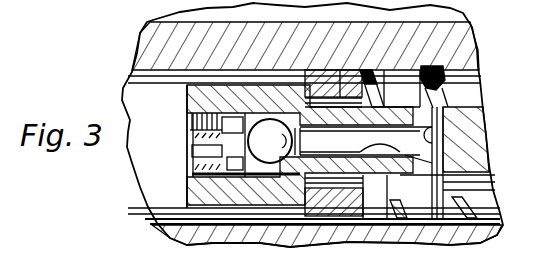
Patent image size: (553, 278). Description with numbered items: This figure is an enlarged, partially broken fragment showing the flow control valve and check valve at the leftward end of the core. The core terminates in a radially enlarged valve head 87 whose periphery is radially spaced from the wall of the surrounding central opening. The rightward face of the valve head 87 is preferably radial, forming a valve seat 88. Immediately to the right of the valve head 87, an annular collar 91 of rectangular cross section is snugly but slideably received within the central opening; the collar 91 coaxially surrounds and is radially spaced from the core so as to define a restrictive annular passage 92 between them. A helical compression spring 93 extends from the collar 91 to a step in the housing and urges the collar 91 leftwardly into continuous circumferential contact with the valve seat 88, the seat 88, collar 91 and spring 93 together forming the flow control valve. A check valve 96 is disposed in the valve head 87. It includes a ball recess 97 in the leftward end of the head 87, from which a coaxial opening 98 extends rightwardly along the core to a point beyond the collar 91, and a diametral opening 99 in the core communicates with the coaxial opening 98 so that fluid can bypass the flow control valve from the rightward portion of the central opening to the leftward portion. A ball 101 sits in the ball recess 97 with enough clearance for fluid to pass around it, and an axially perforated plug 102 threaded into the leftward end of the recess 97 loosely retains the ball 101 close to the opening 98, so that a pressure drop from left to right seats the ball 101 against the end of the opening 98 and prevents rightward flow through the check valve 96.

The valve head 87 is at (240, 90).
The valve seat 88 is at (308, 68).
The annular collar 91 is at (321, 72).
The restrictive annular passage 92 is at (354, 70).
The helical compression spring 93 is at (450, 65).
The check valve 96 is at (173, 171).
The ball recess 97 is at (187, 125).
The coaxial opening 98 is at (450, 197).
The diametral opening 99 is at (440, 126).
The ball 101 is at (282, 238).
The axially perforated plug 102 is at (168, 232).